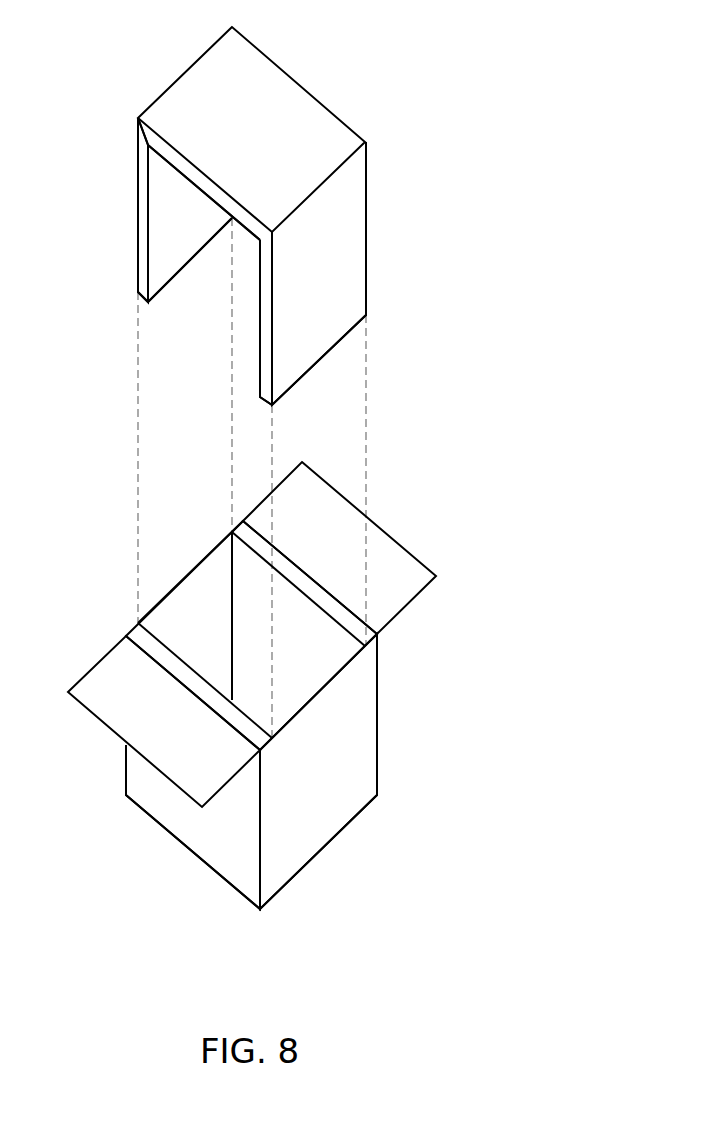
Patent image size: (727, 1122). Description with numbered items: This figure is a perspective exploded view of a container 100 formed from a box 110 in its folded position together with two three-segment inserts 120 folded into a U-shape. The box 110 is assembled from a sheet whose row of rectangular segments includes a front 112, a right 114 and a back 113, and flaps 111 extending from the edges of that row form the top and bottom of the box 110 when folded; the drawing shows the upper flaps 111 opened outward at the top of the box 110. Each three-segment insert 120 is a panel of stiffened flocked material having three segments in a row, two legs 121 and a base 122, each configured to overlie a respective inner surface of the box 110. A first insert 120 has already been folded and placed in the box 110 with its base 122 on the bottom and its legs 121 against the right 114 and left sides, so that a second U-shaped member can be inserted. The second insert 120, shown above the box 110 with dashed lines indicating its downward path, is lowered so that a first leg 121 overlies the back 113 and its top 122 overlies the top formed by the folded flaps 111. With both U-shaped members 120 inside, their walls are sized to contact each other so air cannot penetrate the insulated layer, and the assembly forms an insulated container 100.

The container 100 is at (463, 360).
The box 110 is at (387, 667).
The flaps 111 is at (366, 563).
The front 112 is at (344, 788).
The back 113 is at (214, 640).
The right 114 is at (249, 841).
The three-segment insert 120 is at (348, 100).
The leg 121 is at (207, 227).
The base 122 is at (272, 140).